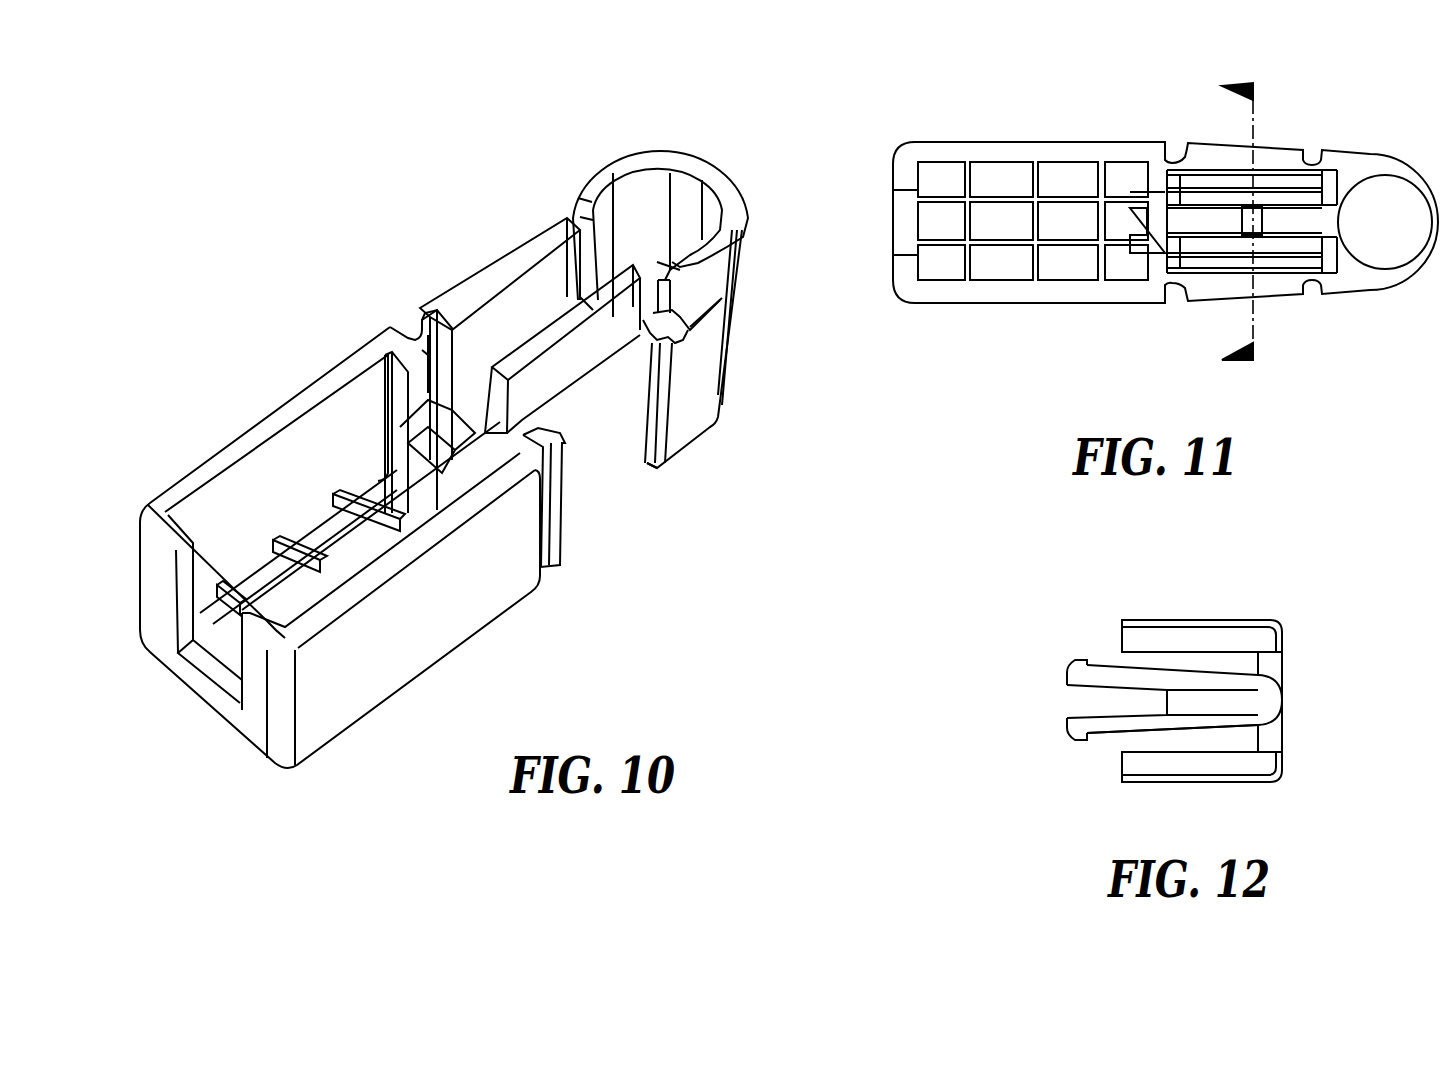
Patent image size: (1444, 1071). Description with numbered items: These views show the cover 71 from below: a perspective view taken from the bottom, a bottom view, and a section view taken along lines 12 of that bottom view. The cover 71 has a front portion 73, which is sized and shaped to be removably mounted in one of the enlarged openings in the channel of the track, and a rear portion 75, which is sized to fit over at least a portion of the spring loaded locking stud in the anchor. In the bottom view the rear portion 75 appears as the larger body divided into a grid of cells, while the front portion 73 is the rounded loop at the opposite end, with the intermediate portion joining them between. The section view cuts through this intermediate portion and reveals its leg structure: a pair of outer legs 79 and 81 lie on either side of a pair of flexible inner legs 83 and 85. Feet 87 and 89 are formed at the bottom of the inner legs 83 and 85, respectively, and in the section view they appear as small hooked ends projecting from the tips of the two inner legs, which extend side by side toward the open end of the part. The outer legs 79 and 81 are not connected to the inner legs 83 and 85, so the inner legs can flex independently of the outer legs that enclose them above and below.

In FIG. 11, the section lines 12 is at (1221, 223).
In FIG. 11, the cover 71 is at (1165, 225).
In FIG. 12, the cover 71 is at (1222, 615).
In FIG. 10, the front portion 73 is at (648, 148).
In FIG. 11, the front portion 73 is at (1400, 165).
In FIG. 10, the rear portion 75 is at (270, 424).
In FIG. 11, the rear portion 75 is at (1032, 150).
In FIG. 12, the outer leg 79 is at (1170, 625).
In FIG. 12, the outer leg 81 is at (1185, 775).
In FIG. 10, the flexible inner leg 83 is at (600, 345).
In FIG. 12, the flexible inner leg 83 is at (1100, 738).
In FIG. 10, the flexible inner leg 85 is at (457, 352).
In FIG. 12, the flexible inner leg 85 is at (1080, 685).
In FIG. 10, the foot 87 is at (537, 507).
In FIG. 12, the foot 87 is at (1080, 730).
In FIG. 10, the foot 89 is at (420, 325).
In FIG. 12, the foot 89 is at (1075, 663).